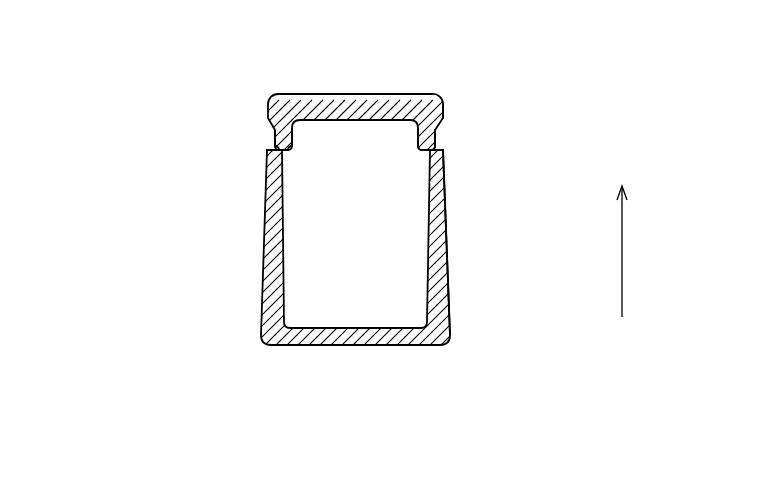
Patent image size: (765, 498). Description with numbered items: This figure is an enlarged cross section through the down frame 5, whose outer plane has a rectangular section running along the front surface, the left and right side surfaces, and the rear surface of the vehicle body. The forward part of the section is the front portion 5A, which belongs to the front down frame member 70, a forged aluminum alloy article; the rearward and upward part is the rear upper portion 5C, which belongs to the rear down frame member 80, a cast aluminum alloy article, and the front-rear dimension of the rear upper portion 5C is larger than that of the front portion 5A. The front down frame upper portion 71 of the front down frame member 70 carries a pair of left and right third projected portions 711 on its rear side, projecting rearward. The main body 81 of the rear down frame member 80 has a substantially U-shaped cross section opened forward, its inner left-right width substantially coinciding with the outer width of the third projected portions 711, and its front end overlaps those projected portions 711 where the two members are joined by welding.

The down frame 5 is at (235, 148).
The front portion 5A is at (445, 113).
The rear upper portion 5C is at (450, 320).
The front down frame member 70 is at (423, 80).
The front down frame upper portion 71 is at (328, 93).
The third projected portions 711 is at (427, 150).
The rear down frame member 80 is at (268, 367).
The main body 81 is at (408, 345).